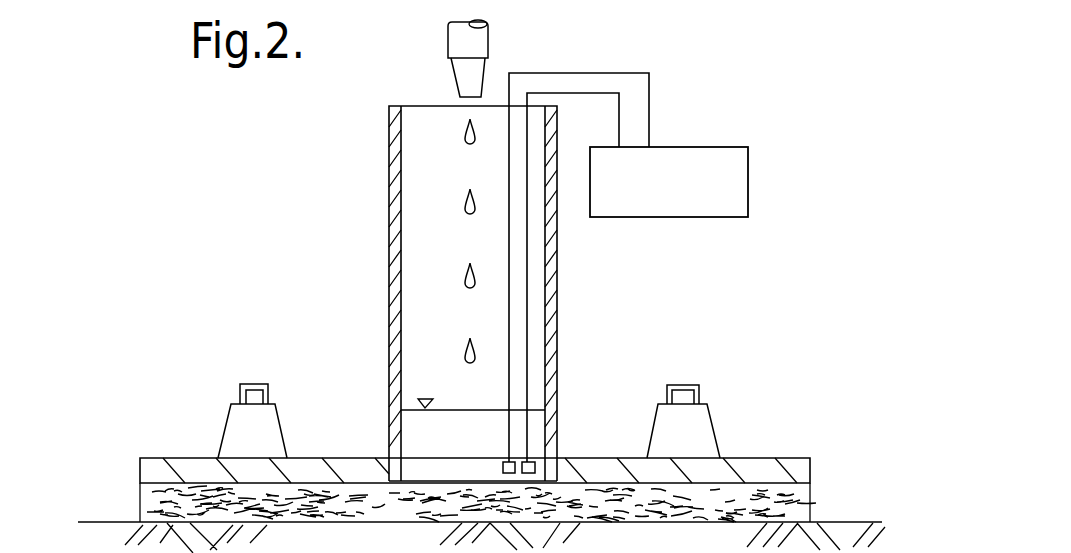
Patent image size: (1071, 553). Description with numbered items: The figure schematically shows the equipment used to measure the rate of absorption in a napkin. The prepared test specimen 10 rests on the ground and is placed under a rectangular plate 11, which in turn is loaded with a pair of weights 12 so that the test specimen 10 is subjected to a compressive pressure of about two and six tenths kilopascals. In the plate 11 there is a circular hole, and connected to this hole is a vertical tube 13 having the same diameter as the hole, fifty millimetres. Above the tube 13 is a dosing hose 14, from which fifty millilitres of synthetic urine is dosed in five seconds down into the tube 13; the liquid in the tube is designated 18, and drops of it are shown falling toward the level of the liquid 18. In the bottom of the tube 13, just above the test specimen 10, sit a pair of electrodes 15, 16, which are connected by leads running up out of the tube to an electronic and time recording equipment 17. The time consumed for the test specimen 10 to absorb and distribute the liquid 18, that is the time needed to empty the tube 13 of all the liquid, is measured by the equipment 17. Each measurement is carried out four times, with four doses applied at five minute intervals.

The test specimen 10 is at (140, 502).
The plate 11 is at (200, 467).
The weights 12 is at (238, 418).
The tube 13 is at (397, 282).
The dosing hose 14 is at (455, 43).
The electrode 15 is at (503, 465).
The electrode 16 is at (535, 465).
The electronic and time recording equipment 17 is at (740, 180).
The liquid 18 is at (410, 422).